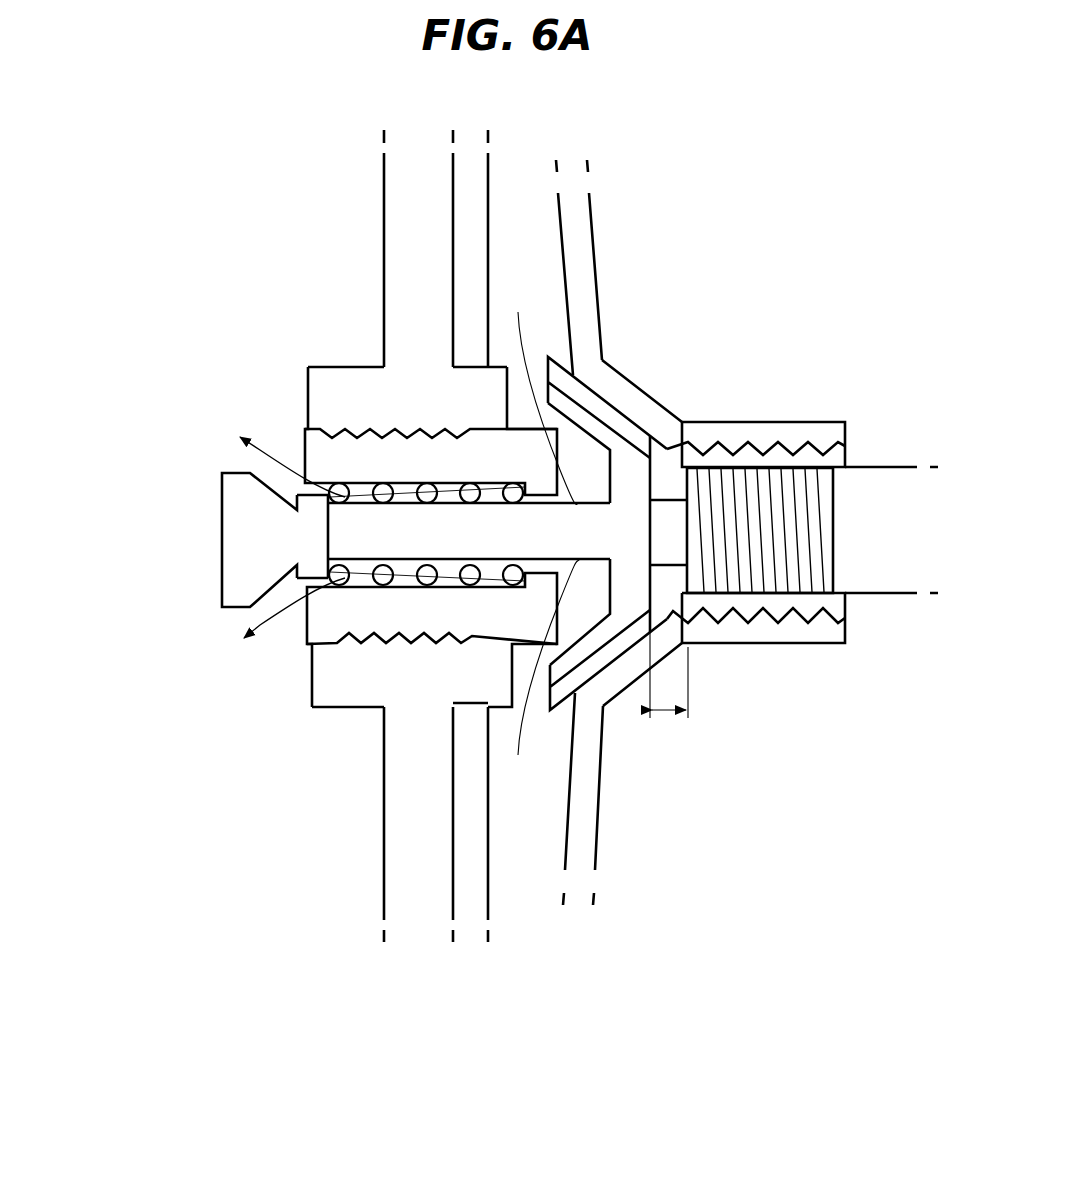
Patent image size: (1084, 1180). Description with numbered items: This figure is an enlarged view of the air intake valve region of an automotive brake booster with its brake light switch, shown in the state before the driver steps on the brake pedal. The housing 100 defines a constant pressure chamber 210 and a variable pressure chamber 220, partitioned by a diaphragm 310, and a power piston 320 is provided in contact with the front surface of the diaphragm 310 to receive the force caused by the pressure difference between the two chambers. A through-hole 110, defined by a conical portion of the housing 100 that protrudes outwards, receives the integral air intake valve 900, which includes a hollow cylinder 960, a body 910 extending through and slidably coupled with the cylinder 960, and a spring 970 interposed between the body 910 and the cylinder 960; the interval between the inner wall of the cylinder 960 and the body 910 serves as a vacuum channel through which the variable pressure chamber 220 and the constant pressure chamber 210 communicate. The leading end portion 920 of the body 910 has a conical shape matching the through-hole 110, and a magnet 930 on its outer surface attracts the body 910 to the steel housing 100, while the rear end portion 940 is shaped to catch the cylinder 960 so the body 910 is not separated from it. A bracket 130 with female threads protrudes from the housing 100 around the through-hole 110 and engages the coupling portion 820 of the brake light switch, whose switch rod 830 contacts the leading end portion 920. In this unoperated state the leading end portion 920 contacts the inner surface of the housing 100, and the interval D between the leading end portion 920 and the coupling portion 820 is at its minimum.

The housing 100 is at (606, 222).
The through-hole 110 is at (676, 468).
The bracket 130 is at (795, 430).
The constant pressure chamber 210 is at (347, 217).
The variable pressure chamber 220 is at (550, 225).
The diaphragm 310 is at (490, 870).
The power piston 320 is at (384, 845).
The coupling portion 820 is at (870, 488).
The switch rod 830 is at (670, 525).
The air intake valve 900 is at (249, 396).
The body 910 is at (330, 538).
The leading end portion 920 is at (587, 647).
The magnet 930 is at (593, 402).
The rear end portion 940 is at (235, 541).
The cylinder 960 is at (338, 457).
The spring 970 is at (386, 582).